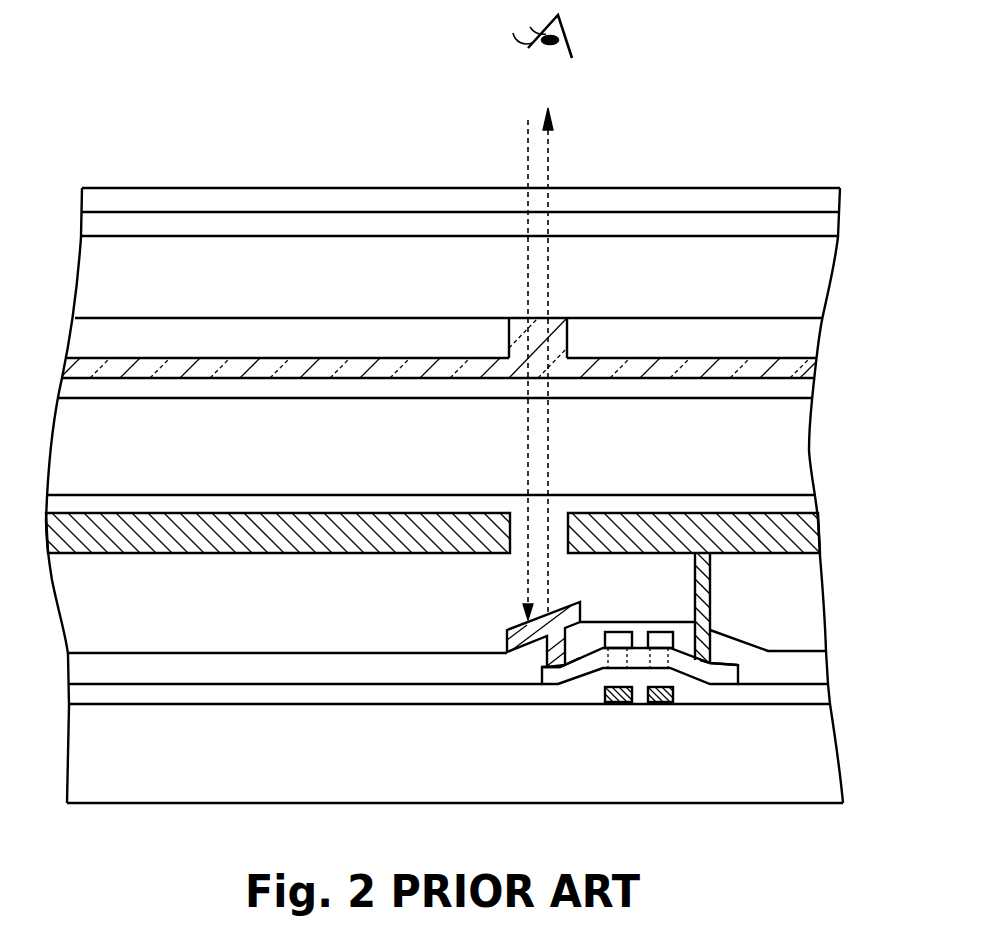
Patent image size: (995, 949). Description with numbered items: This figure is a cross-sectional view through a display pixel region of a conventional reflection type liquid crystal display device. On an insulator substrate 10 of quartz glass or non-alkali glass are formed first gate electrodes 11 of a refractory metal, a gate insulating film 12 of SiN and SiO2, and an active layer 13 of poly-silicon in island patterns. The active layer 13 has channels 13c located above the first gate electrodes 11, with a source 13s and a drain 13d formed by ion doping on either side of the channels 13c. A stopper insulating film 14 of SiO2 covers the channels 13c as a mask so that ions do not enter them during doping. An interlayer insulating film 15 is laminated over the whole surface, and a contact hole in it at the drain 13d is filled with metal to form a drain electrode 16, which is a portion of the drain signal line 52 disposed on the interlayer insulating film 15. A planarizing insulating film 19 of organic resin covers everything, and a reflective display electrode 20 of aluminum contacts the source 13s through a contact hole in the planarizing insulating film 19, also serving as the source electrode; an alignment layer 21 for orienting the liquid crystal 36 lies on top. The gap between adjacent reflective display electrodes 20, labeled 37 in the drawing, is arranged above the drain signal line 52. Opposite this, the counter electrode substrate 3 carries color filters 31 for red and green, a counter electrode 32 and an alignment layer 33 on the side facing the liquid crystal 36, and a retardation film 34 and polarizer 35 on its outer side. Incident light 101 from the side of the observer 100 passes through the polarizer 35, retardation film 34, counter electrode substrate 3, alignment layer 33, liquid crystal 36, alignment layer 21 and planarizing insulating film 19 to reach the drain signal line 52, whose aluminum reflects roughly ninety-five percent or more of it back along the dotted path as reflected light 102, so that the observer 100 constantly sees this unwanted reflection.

The observer 100 is at (562, 23).
The incident light 101 is at (527, 120).
The reflected light 102 is at (549, 136).
The polarizer 35 is at (845, 192).
The retardation film 34 is at (843, 216).
The counter substrate 3 is at (823, 278).
The color filters 31 is at (810, 338).
The counter electrode 32 is at (807, 363).
The alignment layer 33 is at (805, 388).
The liquid crystal 36 is at (806, 437).
The opening in light shielding film 37 is at (557, 522).
The alignment layer 21 is at (808, 504).
The reflective display electrode 20 is at (815, 530).
The planarizing insulating film 19 is at (812, 598).
The interlayer insulating film 15 is at (812, 666).
The gate insulating film 12 is at (815, 690).
The insulator substrate 10 is at (818, 716).
The drain signal line 52 is at (498, 627).
The drain electrode 16 is at (523, 627).
The stopper insulating film 14 is at (660, 630).
The active layer 13 is at (745, 677).
The drain 13d is at (552, 675).
The source 13s is at (707, 673).
The channels 13c is at (608, 658).
The first gate electrodes 11 is at (622, 705).